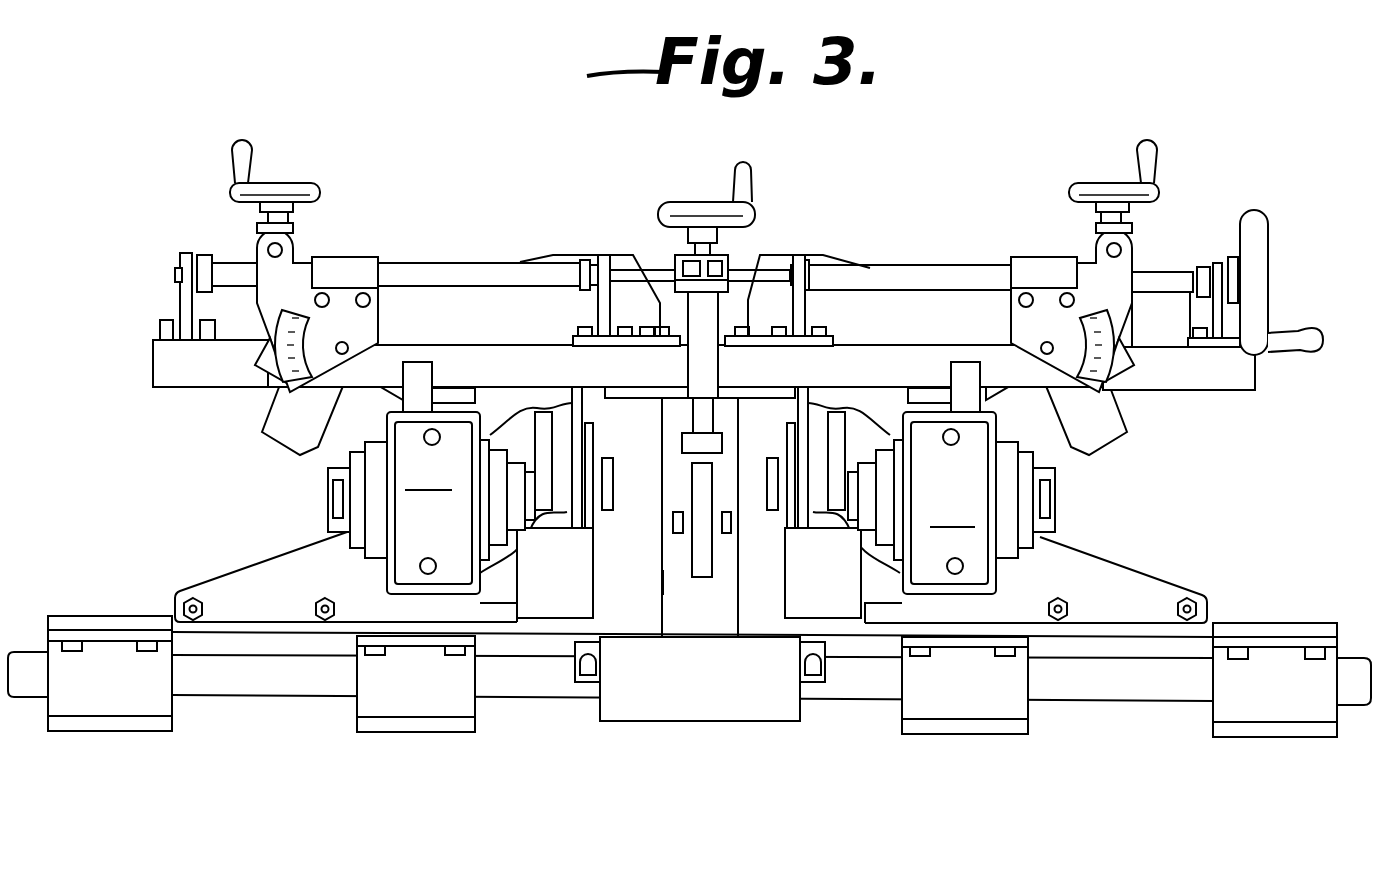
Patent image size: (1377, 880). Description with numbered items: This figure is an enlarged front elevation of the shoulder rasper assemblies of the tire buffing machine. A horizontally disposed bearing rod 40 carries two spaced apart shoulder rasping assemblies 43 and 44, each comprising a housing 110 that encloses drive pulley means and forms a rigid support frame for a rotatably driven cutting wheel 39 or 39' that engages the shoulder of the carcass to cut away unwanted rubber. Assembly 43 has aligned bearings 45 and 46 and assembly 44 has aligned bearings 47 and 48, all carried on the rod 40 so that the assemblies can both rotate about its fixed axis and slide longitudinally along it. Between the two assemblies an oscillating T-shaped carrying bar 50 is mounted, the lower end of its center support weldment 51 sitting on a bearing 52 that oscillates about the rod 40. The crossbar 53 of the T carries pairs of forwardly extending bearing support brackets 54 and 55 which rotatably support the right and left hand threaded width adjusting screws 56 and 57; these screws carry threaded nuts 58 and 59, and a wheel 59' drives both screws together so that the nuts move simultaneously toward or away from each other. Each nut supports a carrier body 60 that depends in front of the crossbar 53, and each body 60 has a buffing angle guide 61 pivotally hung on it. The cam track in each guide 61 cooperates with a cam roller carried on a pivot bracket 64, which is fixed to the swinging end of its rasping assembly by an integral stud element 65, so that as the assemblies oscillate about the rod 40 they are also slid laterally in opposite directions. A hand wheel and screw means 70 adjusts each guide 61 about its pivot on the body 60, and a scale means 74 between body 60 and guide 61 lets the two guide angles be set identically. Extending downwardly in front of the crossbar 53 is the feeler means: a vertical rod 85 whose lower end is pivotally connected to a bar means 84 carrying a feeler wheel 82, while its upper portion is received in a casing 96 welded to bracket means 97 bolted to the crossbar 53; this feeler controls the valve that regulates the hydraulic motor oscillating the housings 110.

The cutting wheel 39 is at (758, 464).
The cutting wheel 39' is at (616, 474).
The bearing rod 40 is at (257, 688).
The shoulder rasping assembly 43 is at (238, 585).
The shoulder rasping assembly 44 is at (1117, 582).
The bearing 45 is at (130, 707).
The bearing 46 is at (413, 707).
The bearing 47 is at (983, 713).
The bearing 48 is at (1282, 715).
The T-shaped carrying bar 50 is at (700, 650).
The center support weldment 51 is at (688, 582).
The bearing 52 is at (612, 718).
The crossbar 53 is at (178, 380).
The bearing support bracket 54 is at (185, 296).
The bearing support bracket 55 is at (800, 308).
The width adjusting screw 56 is at (440, 272).
The width adjusting screw 57 is at (925, 280).
The threaded nut 58 is at (351, 267).
The threaded nut 59 is at (1044, 254).
The wheel 59' is at (1227, 282).
The carrier body 60 is at (365, 318).
The buffing angle guide 61 is at (284, 430).
The pivot bracket 64 is at (380, 385).
The stud element 65 is at (427, 372).
The hand wheel and screw means 70 is at (318, 180).
The scale means 74 is at (262, 398).
The feeler wheel 82 is at (703, 580).
The bar means 84 is at (718, 537).
The rod 85 is at (704, 417).
The casing 96 is at (708, 363).
The bracket means 97 is at (648, 335).
The housing 110 is at (691, 503).